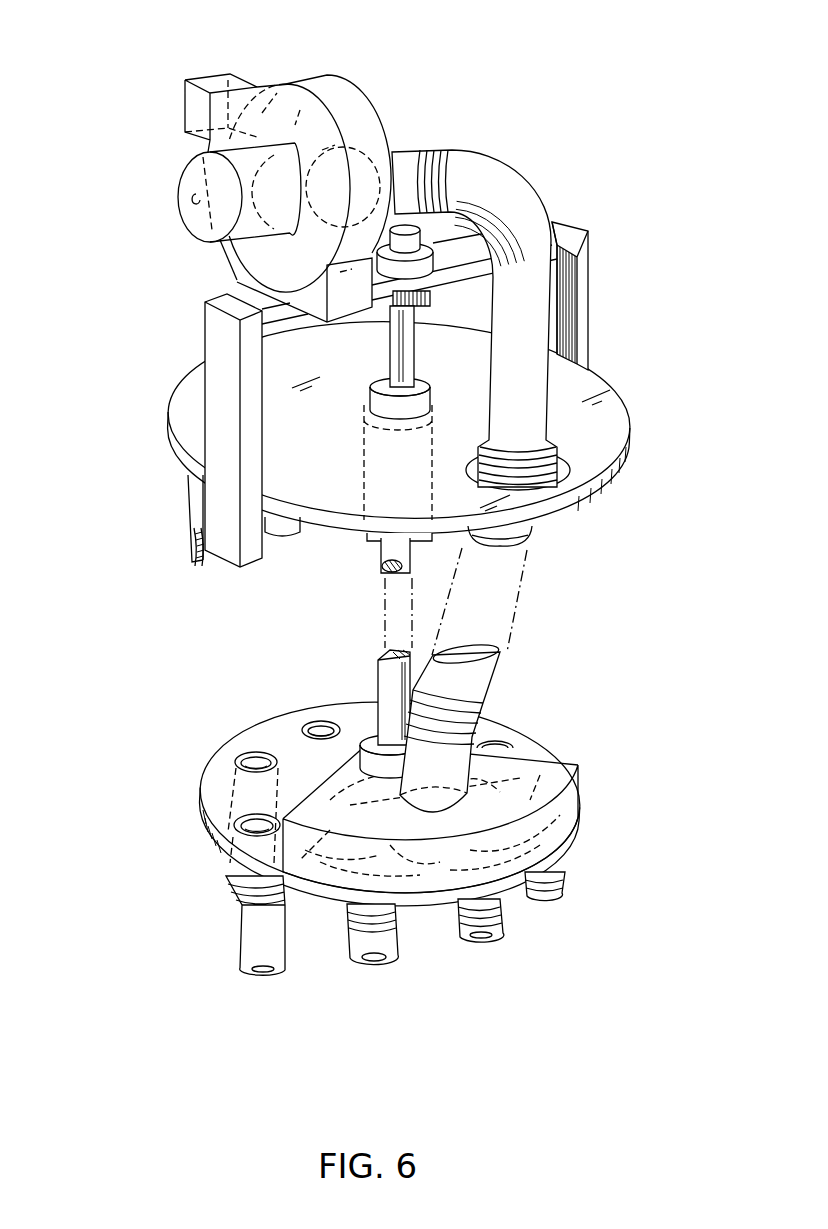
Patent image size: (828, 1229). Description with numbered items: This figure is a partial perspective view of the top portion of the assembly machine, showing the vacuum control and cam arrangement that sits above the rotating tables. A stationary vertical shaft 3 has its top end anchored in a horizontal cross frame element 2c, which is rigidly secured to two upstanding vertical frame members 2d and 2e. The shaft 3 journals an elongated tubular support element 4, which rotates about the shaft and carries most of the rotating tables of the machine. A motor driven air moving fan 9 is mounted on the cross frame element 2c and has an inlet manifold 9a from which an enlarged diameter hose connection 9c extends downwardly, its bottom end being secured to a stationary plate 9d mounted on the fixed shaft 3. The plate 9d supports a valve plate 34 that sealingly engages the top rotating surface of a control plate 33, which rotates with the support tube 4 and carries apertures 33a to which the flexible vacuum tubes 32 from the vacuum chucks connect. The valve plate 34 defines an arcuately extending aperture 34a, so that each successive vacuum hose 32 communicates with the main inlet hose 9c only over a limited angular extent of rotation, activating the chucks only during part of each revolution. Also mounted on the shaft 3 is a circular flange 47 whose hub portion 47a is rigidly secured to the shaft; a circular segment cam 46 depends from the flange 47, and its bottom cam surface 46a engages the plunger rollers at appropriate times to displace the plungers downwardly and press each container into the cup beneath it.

The motor driven air moving fan 9 is at (311, 165).
The inlet manifold 9a is at (382, 146).
The hose connection 9c is at (523, 178).
The stationary plate 9d is at (535, 757).
The horizontal cross frame element 2c is at (563, 232).
The upstanding vertical frame member 2d is at (262, 550).
The upstanding vertical frame member 2e is at (580, 328).
The vertical shaft 3 is at (420, 355).
The tubular support element 4 is at (367, 743).
The circular flange 47 is at (183, 390).
The hub portion 47a is at (423, 538).
The circular segment cam 46 is at (196, 498).
The bottom cam surface 46a is at (196, 566).
The control plate 33 is at (200, 795).
The aperture 33a is at (312, 731).
The valve plate 34 is at (563, 810).
The arcuately extending aperture 34a is at (563, 793).
The flexible tube 32 is at (368, 955).